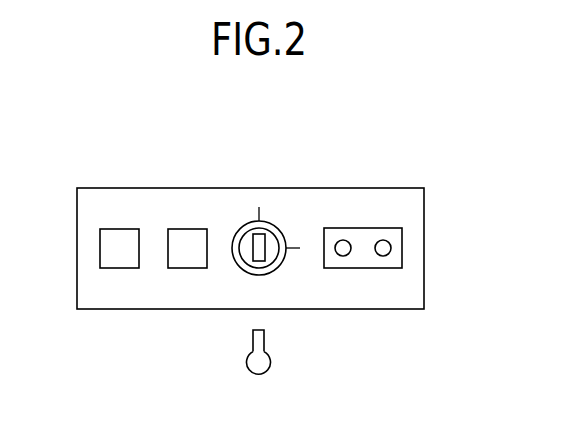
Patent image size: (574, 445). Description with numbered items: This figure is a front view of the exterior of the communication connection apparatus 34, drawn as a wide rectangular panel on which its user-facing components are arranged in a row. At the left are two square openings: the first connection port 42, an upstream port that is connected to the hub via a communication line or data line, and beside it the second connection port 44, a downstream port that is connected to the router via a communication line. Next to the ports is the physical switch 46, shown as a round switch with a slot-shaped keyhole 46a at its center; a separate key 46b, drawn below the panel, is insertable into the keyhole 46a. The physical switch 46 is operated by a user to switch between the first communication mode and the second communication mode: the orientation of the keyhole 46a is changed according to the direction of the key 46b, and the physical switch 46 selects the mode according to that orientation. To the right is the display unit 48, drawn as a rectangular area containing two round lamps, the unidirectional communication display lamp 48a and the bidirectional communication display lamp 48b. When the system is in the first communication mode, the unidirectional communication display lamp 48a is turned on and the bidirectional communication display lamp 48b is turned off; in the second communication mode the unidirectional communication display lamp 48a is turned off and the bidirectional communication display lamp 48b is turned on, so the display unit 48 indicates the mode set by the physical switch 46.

The communication connection apparatus 34 is at (390, 189).
The first connection port 42 is at (120, 228).
The second connection port 44 is at (189, 228).
The physical switch 46 is at (246, 222).
The keyhole 46a is at (247, 252).
The key 46b is at (271, 362).
The display unit 48 is at (360, 228).
The unidirectional communication display lamp 48a is at (343, 256).
The bidirectional communication display lamp 48b is at (383, 256).